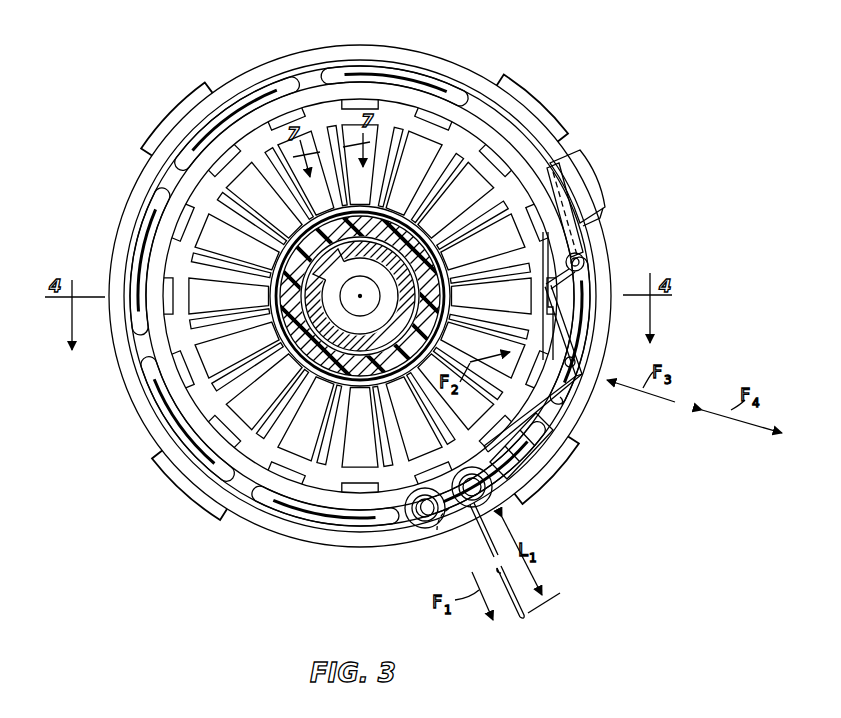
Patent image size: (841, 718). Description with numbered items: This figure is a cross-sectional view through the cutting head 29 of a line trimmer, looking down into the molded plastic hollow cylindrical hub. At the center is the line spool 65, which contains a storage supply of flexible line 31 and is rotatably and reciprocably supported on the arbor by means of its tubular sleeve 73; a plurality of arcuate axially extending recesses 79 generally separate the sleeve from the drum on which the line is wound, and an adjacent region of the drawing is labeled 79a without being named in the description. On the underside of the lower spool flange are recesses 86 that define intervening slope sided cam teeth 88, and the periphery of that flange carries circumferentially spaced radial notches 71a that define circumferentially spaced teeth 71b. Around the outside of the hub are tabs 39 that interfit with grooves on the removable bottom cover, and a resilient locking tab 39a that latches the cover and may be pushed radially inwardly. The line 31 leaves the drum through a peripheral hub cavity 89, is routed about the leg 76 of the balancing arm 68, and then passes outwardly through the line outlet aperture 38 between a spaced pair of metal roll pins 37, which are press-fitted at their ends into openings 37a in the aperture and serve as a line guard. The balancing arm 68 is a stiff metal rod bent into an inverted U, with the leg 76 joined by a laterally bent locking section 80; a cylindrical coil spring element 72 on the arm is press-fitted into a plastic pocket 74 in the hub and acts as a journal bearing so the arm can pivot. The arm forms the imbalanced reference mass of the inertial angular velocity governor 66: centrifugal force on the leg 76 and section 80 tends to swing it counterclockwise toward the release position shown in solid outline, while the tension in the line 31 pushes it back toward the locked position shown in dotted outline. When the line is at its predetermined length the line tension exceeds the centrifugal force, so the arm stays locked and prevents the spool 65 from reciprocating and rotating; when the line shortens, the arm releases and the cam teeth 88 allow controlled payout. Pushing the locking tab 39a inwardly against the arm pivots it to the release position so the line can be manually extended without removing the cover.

The head 29 is at (113, 388).
The flexible line 31 is at (547, 435).
The roll pins 37 is at (415, 523).
The openings 37a is at (425, 528).
The line outlet aperture 38 is at (446, 545).
The tabs 39 is at (178, 100).
The resilient locking tab 39a is at (607, 204).
The line spool 65 is at (213, 193).
The inertial angular velocity governor 66 is at (456, 142).
The balancing arm 68 is at (585, 290).
The radial notches 71a is at (362, 108).
The circumferentially spaced teeth 71b is at (318, 104).
The coil spring element 72 is at (585, 263).
The tubular sleeve 73 is at (455, 258).
The pocket 74 is at (577, 247).
The leg 76 is at (578, 362).
The arcuate axially extending recesses 79 is at (297, 228).
The block 79a is at (593, 177).
The locking section 80 is at (577, 310).
The recesses 86 is at (210, 235).
The cam teeth 88 is at (197, 260).
The peripheral hub cavity 89 is at (563, 403).